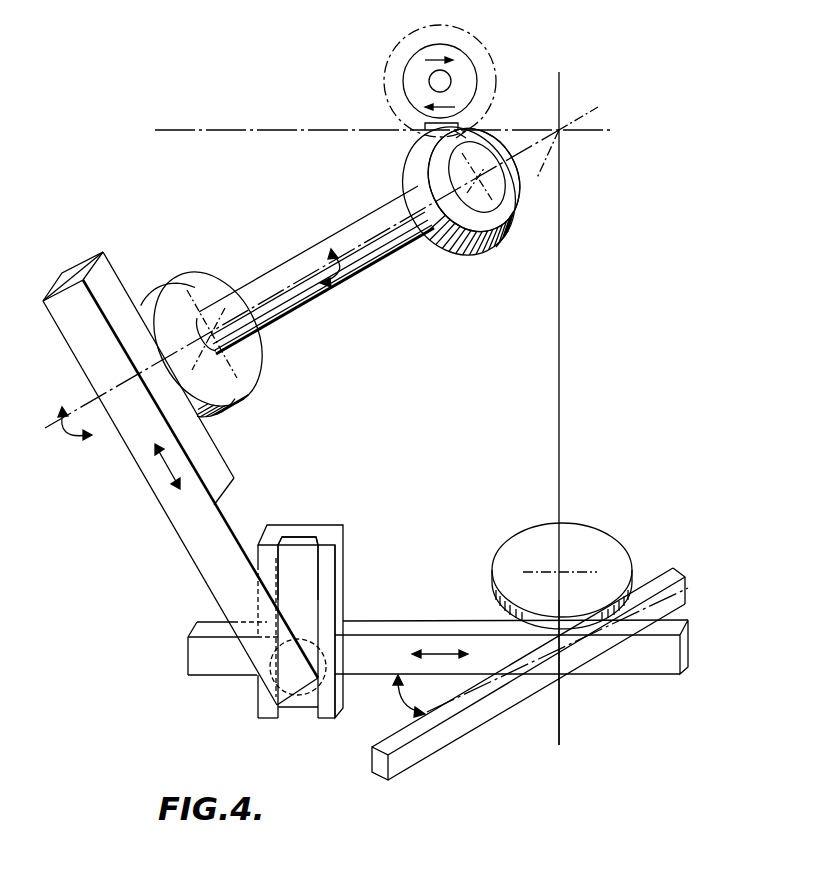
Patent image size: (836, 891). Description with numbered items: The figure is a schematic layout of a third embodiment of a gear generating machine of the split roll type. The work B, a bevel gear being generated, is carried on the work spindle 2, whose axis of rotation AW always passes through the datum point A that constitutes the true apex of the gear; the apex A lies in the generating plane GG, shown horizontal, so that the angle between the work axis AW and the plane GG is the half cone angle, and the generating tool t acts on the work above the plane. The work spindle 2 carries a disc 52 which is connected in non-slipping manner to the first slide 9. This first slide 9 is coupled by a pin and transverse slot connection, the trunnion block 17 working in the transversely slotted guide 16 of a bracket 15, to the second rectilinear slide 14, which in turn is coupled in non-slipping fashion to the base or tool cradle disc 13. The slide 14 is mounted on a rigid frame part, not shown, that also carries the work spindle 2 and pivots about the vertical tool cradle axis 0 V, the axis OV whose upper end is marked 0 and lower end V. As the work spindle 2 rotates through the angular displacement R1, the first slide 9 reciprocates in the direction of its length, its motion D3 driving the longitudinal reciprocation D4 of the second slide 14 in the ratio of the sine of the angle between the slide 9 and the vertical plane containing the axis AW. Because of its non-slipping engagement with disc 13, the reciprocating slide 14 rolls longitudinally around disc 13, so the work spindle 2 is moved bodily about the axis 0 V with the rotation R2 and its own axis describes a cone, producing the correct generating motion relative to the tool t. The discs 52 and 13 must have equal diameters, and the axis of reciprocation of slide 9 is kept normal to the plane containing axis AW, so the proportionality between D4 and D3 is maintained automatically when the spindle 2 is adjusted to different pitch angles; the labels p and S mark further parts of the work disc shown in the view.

The work spindle 2 is at (368, 220).
The first slide 9 is at (160, 497).
The base or tool cradle disc 13 is at (598, 540).
The second rectilinear slide 14 is at (406, 628).
The bracket 15 is at (343, 552).
The transversely slotted guide 16 is at (313, 541).
The trunnion block 17 is at (313, 632).
The disc 52 is at (208, 280).
The tool t is at (463, 37).
The contact pad S is at (424, 131).
The rim of disk B p is at (411, 162).
The work B is at (493, 246).
The axis OV 0 is at (566, 397).
The axis OV V is at (570, 675).
The datum point / apex A is at (578, 104).
The generating plane G is at (385, 154).
The work axis AW W is at (298, 291).
The rotation of the work R1 is at (340, 280).
The rotation of the cradle R2 is at (241, 551).
The motion of the first slide D3 is at (161, 455).
The motion of the second slide D4 is at (456, 657).